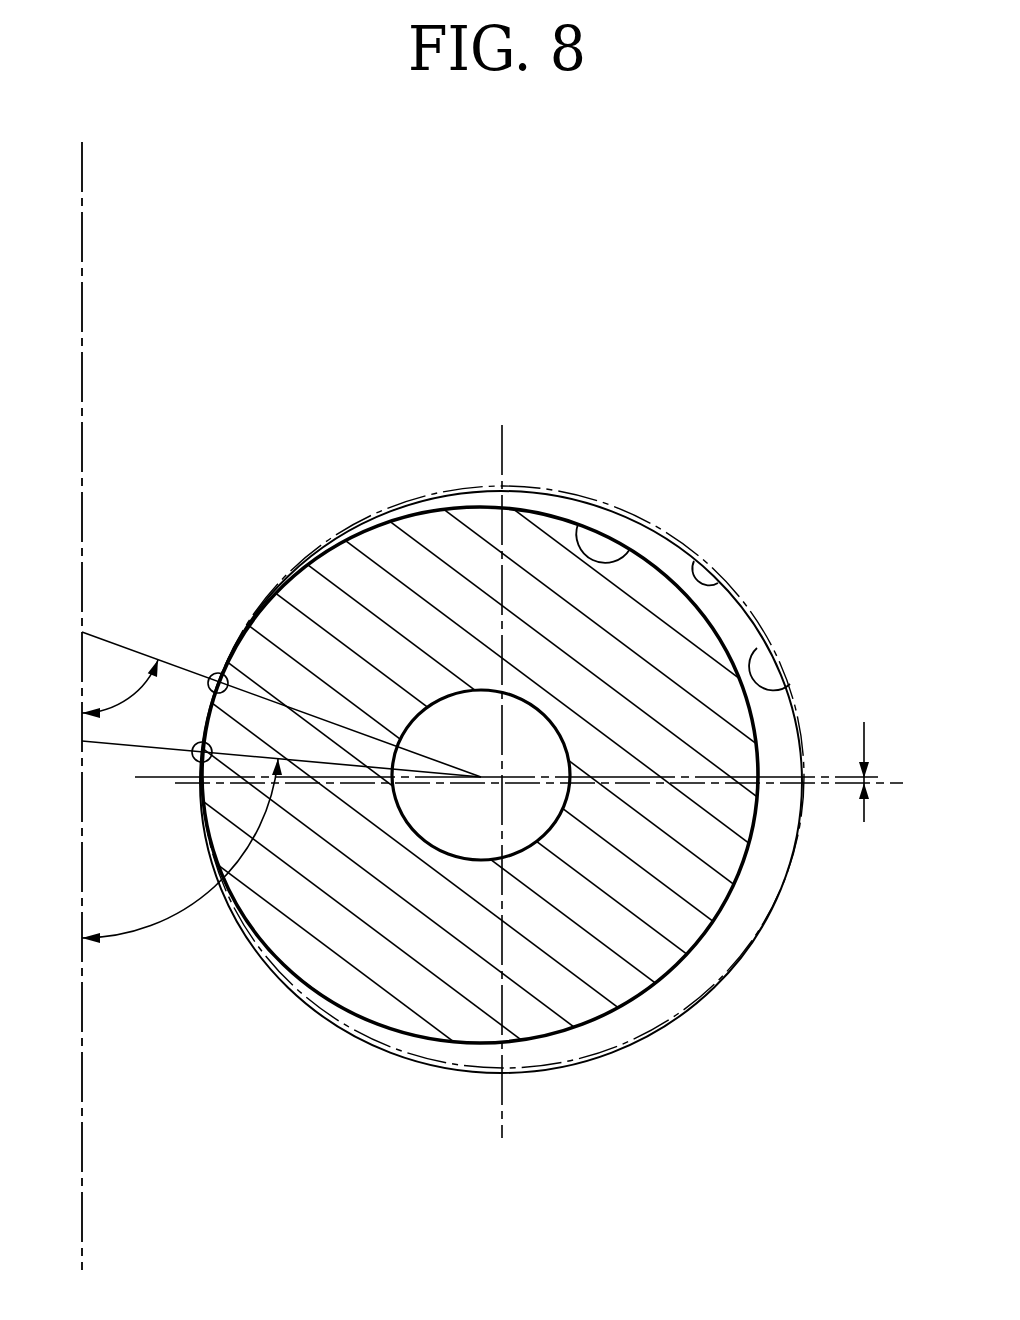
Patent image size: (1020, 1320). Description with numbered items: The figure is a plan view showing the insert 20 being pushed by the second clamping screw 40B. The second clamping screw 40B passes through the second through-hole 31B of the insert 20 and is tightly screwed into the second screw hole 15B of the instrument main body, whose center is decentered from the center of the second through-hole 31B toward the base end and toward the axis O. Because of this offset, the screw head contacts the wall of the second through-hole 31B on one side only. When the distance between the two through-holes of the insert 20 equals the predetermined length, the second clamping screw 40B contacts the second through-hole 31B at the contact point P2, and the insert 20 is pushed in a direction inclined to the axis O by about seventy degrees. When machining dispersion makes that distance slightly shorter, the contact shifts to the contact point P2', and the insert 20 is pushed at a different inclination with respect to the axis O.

The insert 20 is at (703, 418).
The second screw hole 15B is at (632, 550).
The second through-hole 31B is at (727, 580).
The second clamping screw 40B is at (658, 965).
The axis O is at (83, 170).
The contact point P2 is at (281, 657).
The contact point P2' is at (281, 805).